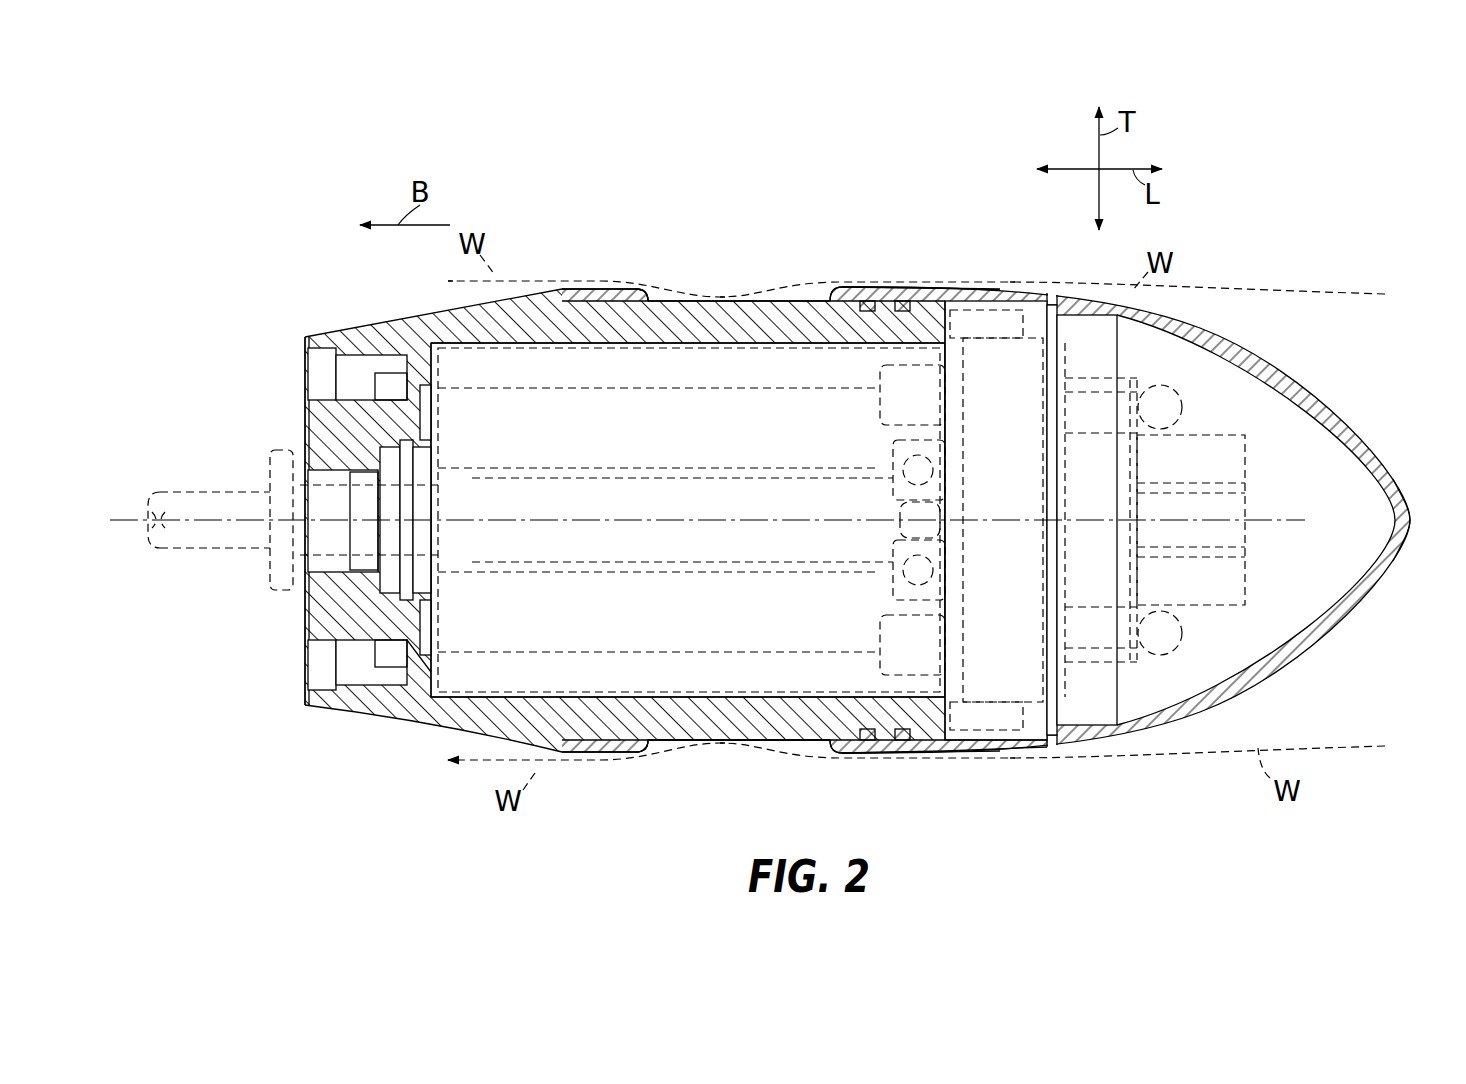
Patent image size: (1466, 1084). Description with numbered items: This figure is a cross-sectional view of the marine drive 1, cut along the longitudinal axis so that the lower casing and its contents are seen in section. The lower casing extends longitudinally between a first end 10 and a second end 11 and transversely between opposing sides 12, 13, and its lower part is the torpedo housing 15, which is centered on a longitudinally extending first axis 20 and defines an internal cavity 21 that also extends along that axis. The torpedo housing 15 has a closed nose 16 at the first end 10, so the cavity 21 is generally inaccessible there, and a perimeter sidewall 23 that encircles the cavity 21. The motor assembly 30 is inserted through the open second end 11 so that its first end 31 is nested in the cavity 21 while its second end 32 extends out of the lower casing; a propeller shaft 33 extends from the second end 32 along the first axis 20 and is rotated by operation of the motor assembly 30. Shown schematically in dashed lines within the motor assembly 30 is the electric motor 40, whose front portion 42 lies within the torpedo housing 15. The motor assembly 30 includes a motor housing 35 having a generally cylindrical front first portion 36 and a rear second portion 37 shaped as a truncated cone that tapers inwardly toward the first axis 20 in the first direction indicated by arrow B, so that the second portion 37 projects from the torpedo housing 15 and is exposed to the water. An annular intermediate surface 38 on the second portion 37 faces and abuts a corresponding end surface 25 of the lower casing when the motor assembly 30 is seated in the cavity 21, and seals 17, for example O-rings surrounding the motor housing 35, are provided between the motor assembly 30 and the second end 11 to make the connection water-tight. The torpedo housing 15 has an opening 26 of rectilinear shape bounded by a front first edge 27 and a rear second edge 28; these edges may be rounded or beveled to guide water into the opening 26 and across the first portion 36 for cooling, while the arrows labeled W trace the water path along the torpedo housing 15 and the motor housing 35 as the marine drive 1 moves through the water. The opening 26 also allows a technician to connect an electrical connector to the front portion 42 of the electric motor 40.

The marine drive 1 is at (930, 178).
The first end 10 is at (1390, 375).
The second end 11 is at (555, 790).
The side 12 is at (930, 785).
The side 13 is at (858, 272).
The torpedo housing 15 is at (1285, 340).
The nose 16 is at (1335, 650).
The seals 17 is at (903, 300).
The first axis 20 is at (205, 515).
The internal cavity 21 is at (1133, 672).
The perimeter sidewall 23 is at (890, 745).
The end surface 25 is at (562, 300).
The opening 26 is at (748, 290).
The first edge 27 is at (828, 292).
The second edge 28 is at (645, 295).
The motor assembly 30 is at (490, 727).
The first end 31 is at (935, 748).
The second end 32 is at (330, 312).
The propeller shaft 33 is at (515, 540).
The motor housing 35 is at (680, 330).
The first portion 36 is at (805, 712).
The second portion 37 is at (447, 712).
The intermediate surface 38 is at (575, 748).
The electric motor 40 is at (455, 652).
The front portion 42 is at (1152, 372).